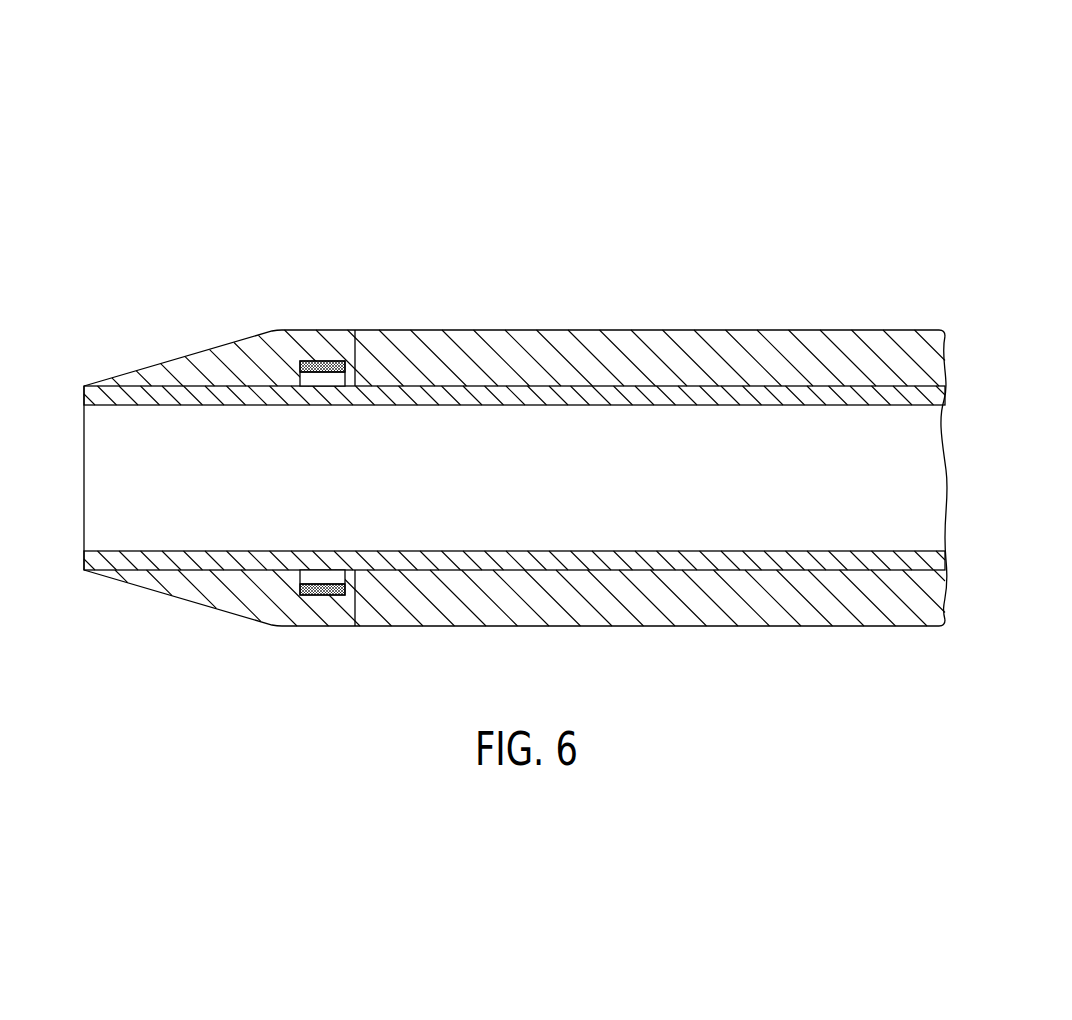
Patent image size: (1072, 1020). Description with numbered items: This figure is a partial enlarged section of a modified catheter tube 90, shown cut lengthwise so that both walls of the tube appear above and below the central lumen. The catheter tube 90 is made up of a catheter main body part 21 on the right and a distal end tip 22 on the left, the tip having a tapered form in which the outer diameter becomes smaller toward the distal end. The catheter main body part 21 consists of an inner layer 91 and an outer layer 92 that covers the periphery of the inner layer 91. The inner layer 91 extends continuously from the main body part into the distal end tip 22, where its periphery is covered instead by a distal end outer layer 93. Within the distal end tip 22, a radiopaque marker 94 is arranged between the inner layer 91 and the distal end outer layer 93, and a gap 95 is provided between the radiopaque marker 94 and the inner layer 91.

The catheter tube 90 is at (677, 207).
The catheter main body part 21 is at (837, 340).
The distal end tip 22 is at (187, 370).
The inner layer 91 is at (930, 562).
The outer layer 92 is at (923, 366).
The distal end outer layer 93 is at (213, 353).
The radiopaque marker 94 is at (320, 361).
The gap 95 is at (328, 378).